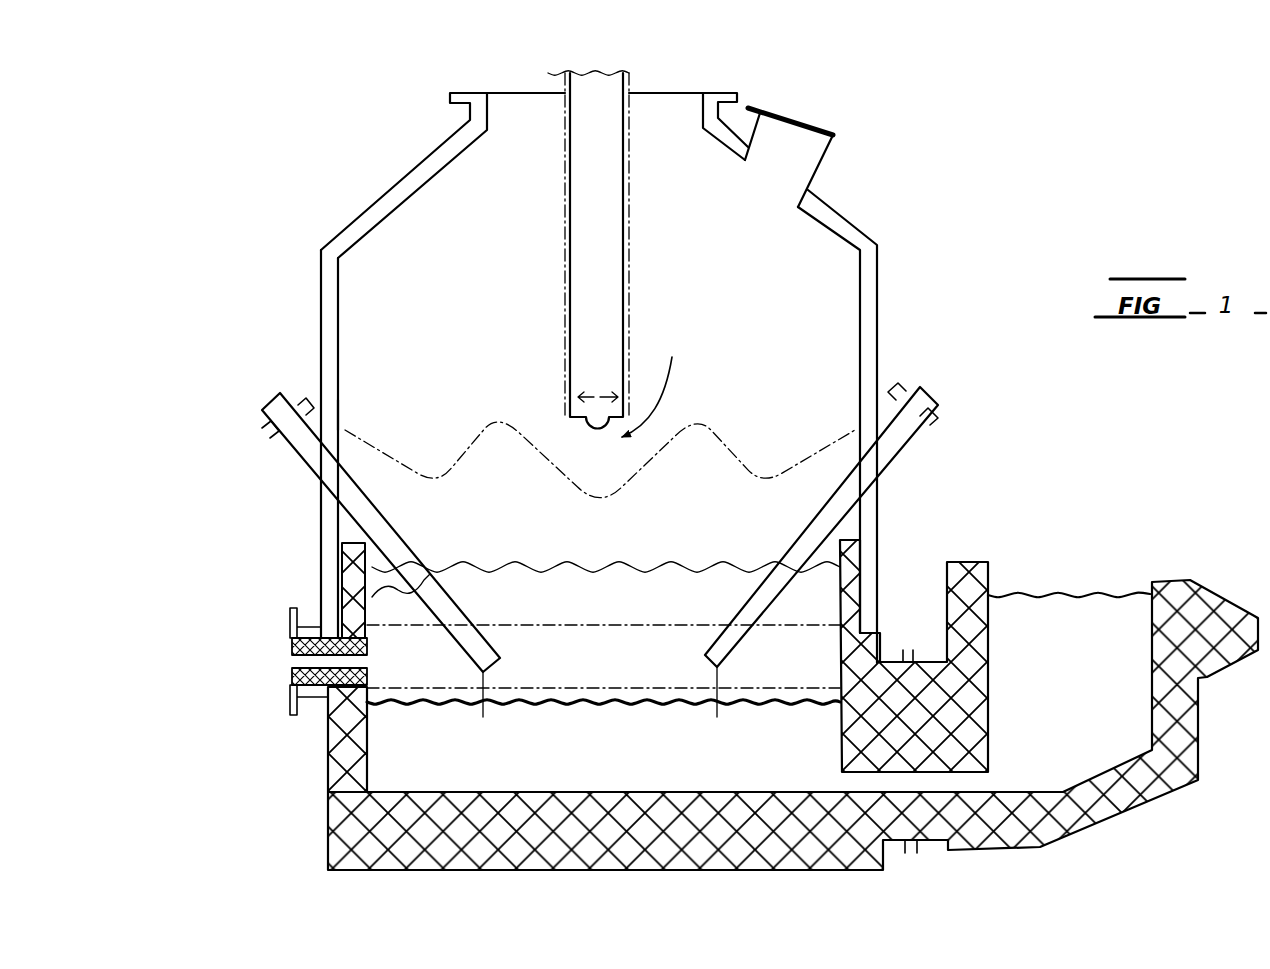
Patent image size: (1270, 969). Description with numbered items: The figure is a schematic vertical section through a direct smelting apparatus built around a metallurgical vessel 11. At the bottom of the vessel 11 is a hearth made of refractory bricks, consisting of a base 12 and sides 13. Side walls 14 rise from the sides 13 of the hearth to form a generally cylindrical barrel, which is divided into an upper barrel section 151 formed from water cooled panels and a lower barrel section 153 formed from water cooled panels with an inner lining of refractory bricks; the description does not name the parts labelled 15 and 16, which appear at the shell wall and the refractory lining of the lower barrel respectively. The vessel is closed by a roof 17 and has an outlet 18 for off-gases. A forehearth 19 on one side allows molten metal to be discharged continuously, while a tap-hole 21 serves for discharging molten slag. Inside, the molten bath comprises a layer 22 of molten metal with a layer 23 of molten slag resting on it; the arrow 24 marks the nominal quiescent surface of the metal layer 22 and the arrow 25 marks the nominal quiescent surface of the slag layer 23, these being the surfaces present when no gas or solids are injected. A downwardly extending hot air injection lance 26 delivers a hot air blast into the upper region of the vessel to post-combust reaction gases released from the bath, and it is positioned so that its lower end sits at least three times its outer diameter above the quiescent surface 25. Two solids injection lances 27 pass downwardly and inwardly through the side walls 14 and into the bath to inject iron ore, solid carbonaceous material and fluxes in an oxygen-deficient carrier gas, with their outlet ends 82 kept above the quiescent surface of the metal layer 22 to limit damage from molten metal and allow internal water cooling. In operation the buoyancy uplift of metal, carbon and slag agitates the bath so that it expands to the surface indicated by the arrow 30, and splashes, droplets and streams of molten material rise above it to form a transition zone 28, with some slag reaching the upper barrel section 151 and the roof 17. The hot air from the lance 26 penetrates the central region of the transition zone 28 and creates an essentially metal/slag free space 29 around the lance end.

The metallurgical vessel 11 is at (344, 226).
The base 12 is at (430, 832).
The sides 13 is at (350, 752).
The side walls 14 is at (318, 522).
The furnace shell wall 15 is at (330, 306).
The refractory lining block 16 is at (335, 563).
The roof 17 is at (411, 172).
The outlet 18 is at (822, 148).
The forehearth 19 is at (1080, 701).
The tap-hole 21 is at (292, 673).
The layer of molten metal 22 is at (633, 752).
The layer of molten slag 23 is at (552, 671).
The nominal quiescent surface of the metal layer 24 is at (632, 688).
The nominal quiescent surface of the slag layer 25 is at (632, 622).
The hot air injection lance 26 is at (612, 240).
The solids injection lances 27 is at (262, 413).
The transition zone 28 is at (500, 413).
The metal/slag free space 29 is at (660, 380).
The surface of the expanded molten bath 30 is at (535, 545).
The outlet ends 82 is at (615, 709).
The upper barrel section 151 is at (222, 327).
The lower barrel section 153 is at (286, 596).